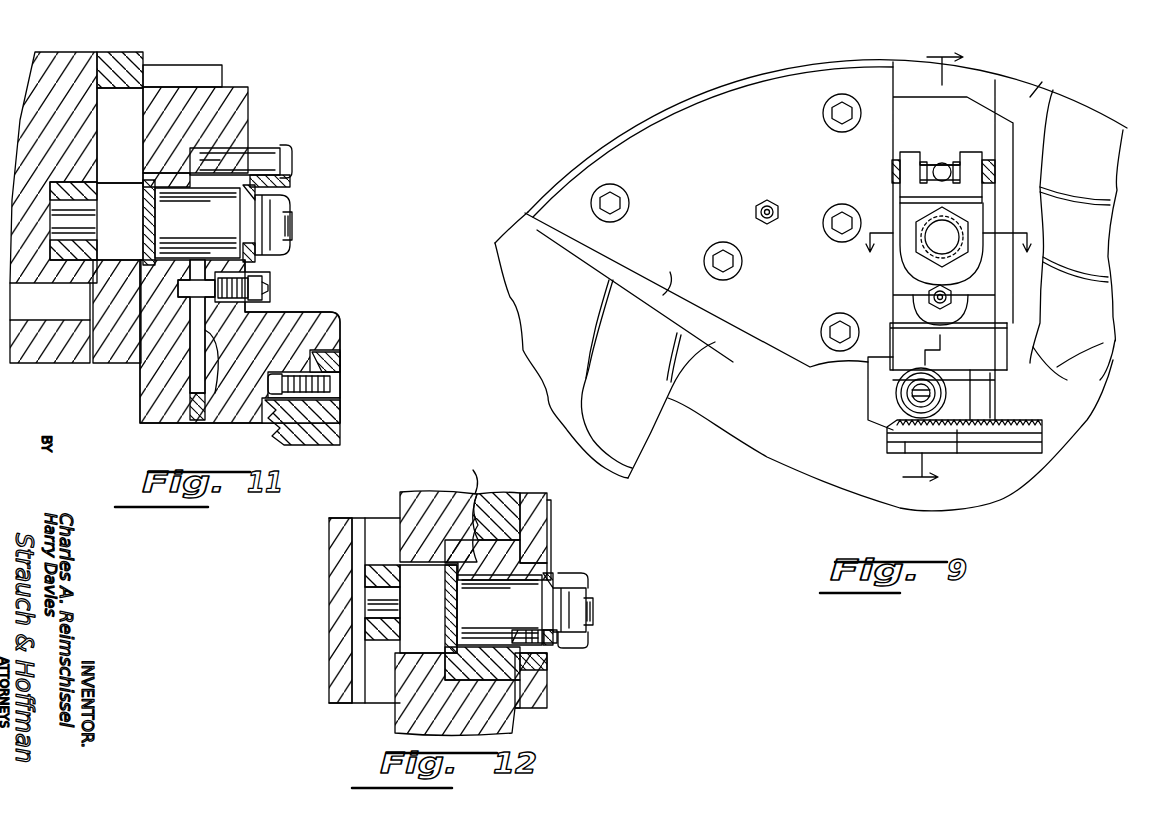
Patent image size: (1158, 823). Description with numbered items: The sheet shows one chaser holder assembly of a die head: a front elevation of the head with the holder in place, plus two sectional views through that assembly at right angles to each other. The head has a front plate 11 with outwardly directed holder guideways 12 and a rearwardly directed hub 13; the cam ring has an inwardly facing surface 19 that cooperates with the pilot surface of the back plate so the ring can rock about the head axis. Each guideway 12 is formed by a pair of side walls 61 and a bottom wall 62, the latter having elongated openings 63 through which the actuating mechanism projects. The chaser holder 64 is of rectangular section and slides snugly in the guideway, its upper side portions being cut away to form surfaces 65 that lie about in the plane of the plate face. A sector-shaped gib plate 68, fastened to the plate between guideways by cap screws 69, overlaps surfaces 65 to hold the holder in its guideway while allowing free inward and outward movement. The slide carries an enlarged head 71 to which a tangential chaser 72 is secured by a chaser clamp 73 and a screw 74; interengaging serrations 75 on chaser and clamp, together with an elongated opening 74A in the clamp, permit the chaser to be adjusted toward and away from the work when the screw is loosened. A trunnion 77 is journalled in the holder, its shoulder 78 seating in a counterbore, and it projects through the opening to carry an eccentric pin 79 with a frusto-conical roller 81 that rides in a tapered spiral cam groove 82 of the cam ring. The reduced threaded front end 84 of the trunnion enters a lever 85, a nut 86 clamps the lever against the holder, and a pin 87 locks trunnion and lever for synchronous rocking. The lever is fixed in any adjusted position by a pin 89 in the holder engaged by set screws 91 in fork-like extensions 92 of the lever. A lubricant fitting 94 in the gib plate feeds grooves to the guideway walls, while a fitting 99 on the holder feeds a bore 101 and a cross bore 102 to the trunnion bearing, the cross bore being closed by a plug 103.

In FIG. 11, the front plate 11 is at (212, 72).
In FIG. 12, the front plate 11 is at (467, 475).
In FIG. 9, the front plate 11 is at (860, 268).
In FIG. 9, the holder guideways 12 is at (947, 251).
In FIG. 12, the hub 13 is at (333, 536).
In FIG. 11, the inwardly facing surface 19 is at (109, 220).
In FIG. 12, the side walls 61 is at (487, 492).
In FIG. 12, the bottom wall 62 is at (447, 494).
In FIG. 11, the elongated openings 63 is at (108, 121).
In FIG. 12, the elongated openings 63 is at (398, 650).
In FIG. 11, the chaser holder 64 is at (245, 108).
In FIG. 12, the chaser holder 64 is at (521, 552).
In FIG. 12, the surfaces 65 is at (548, 522).
In FIG. 9, the surfaces 65 is at (1000, 312).
In FIG. 12, the gib plate 68 is at (530, 500).
In FIG. 9, the gib plate 68 is at (708, 155).
In FIG. 9, the cap screws 69 is at (712, 258).
In FIG. 11, the enlarged head 71 is at (322, 316).
In FIG. 9, the enlarged head 71 is at (968, 351).
In FIG. 11, the tangential chaser 72 is at (292, 441).
In FIG. 9, the tangential chaser 72 is at (990, 448).
In FIG. 11, the chaser clamp 73 is at (340, 362).
In FIG. 9, the chaser clamp 73 is at (955, 453).
In FIG. 11, the screw 74 is at (340, 389).
In FIG. 9, the screw 74 is at (938, 382).
In FIG. 9, the elongated opening 74A is at (896, 393).
In FIG. 9, the interengaging serrations 75 is at (905, 453).
In FIG. 11, the trunnion 77 is at (190, 225).
In FIG. 12, the trunnion 77 is at (491, 610).
In FIG. 11, the shoulder 78 is at (145, 236).
In FIG. 12, the shoulder 78 is at (450, 618).
In FIG. 12, the eccentric pin 79 is at (355, 608).
In FIG. 11, the frusto-conical roller 81 is at (97, 164).
In FIG. 12, the frusto-conical roller 81 is at (365, 580).
In FIG. 12, the spiral cam grooves 82 is at (365, 553).
In FIG. 9, the spiral cam grooves 82 is at (655, 412).
In FIG. 11, the reduced threaded front end 84 is at (282, 217).
In FIG. 12, the reduced threaded front end 84 is at (586, 605).
In FIG. 9, the reduced threaded front end 84 is at (935, 248).
In FIG. 11, the lever 85 is at (255, 258).
In FIG. 12, the lever 85 is at (556, 576).
In FIG. 9, the lever 85 is at (907, 205).
In FIG. 11, the nut 86 is at (289, 230).
In FIG. 12, the nut 86 is at (591, 618).
In FIG. 12, the pin 87 is at (550, 646).
In FIG. 11, the pin 89 is at (283, 153).
In FIG. 9, the pin 89 is at (943, 165).
In FIG. 9, the set screws 91 is at (892, 158).
In FIG. 11, the fork-like extensions 92 is at (292, 163).
In FIG. 12, the fork-like extensions 92 is at (589, 580).
In FIG. 9, the fork-like extensions 92 is at (893, 172).
In FIG. 9, the lubricant fitting 94 is at (770, 203).
In FIG. 11, the lubricant fitting 99 is at (268, 288).
In FIG. 9, the lubricant fitting 99 is at (952, 297).
In FIG. 11, the bore 101 is at (255, 299).
In FIG. 11, the cross bore 102 is at (215, 405).
In FIG. 11, the plug 103 is at (197, 420).